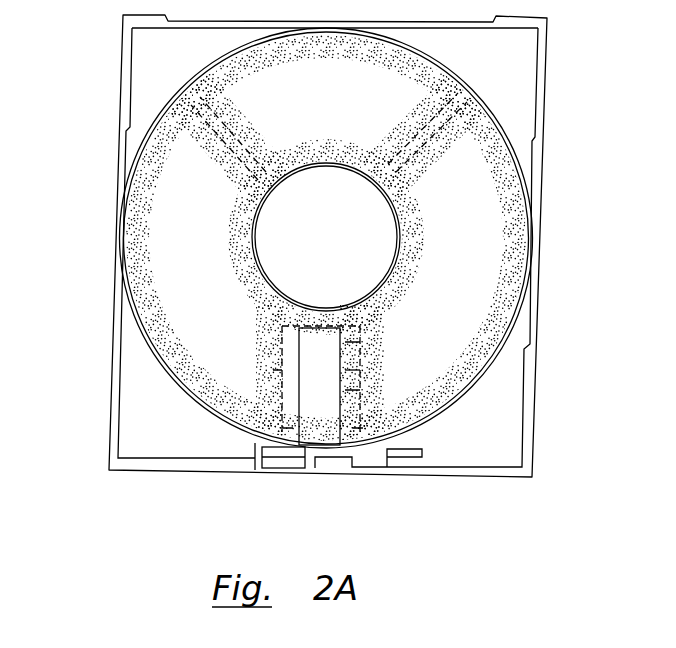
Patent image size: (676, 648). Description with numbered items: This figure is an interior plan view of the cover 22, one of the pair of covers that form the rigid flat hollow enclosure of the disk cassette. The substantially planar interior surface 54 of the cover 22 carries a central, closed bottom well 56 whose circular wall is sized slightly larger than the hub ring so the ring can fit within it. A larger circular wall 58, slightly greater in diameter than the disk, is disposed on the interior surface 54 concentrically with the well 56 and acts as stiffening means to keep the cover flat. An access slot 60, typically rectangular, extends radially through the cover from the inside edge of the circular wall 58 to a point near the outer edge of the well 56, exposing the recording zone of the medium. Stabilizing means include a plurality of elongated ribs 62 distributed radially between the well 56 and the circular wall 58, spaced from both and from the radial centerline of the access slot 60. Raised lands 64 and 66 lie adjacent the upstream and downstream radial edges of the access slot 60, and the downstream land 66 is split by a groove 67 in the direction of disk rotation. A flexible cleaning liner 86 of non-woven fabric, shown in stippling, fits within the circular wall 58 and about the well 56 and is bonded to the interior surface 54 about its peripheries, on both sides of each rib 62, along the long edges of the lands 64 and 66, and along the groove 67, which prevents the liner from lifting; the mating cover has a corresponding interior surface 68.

The cover 22 is at (106, 254).
The interior surface 54 is at (142, 82).
The central closed bottom well 56 is at (398, 255).
The circular wall 58 is at (507, 124).
The access slot 60 is at (321, 417).
The elongated ribs 62 is at (253, 112).
The raised land 64 is at (258, 372).
The raised land 66 is at (386, 336).
The groove 67 is at (348, 380).
The interior surface 68 is at (517, 647).
The flexible cleaning liner 86 is at (470, 354).